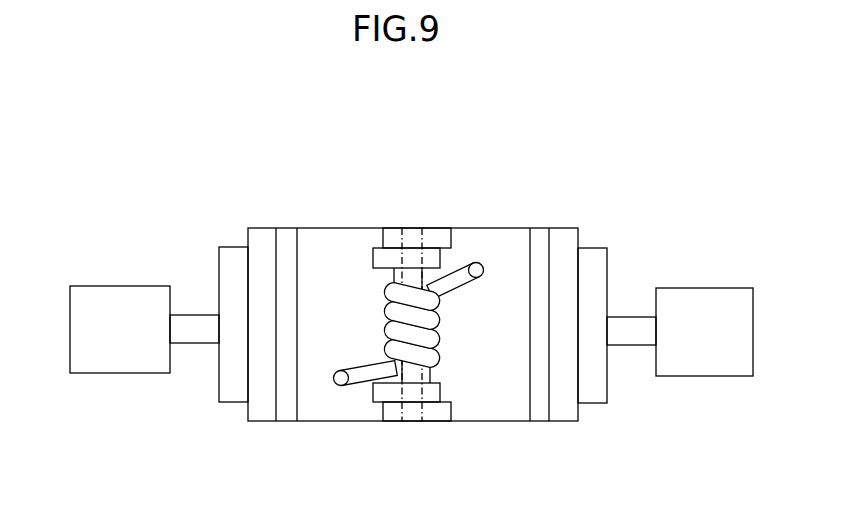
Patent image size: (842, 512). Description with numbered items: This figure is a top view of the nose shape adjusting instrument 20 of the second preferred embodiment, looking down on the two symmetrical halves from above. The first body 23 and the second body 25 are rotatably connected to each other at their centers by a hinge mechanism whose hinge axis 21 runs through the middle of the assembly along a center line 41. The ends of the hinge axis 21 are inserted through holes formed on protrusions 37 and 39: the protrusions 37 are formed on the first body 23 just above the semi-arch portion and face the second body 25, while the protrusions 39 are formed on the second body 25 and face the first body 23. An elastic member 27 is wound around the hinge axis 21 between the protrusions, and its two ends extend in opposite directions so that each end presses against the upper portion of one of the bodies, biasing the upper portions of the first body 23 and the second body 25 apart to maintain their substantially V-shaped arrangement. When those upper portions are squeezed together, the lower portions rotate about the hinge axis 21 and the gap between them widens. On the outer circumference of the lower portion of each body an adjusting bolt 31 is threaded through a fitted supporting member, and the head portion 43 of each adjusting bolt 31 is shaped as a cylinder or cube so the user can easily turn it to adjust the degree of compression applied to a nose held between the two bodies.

The assembly 20 is at (427, 262).
The hinge axis 21 is at (411, 377).
The first body 23 is at (272, 282).
The second body 25 is at (590, 288).
The elastic member 27 is at (395, 290).
The adjusting bolt 31 is at (199, 334).
The protrusion 37 is at (378, 395).
The protrusion 39 is at (442, 413).
The center axis 41 is at (404, 228).
The head portion 43 is at (120, 296).